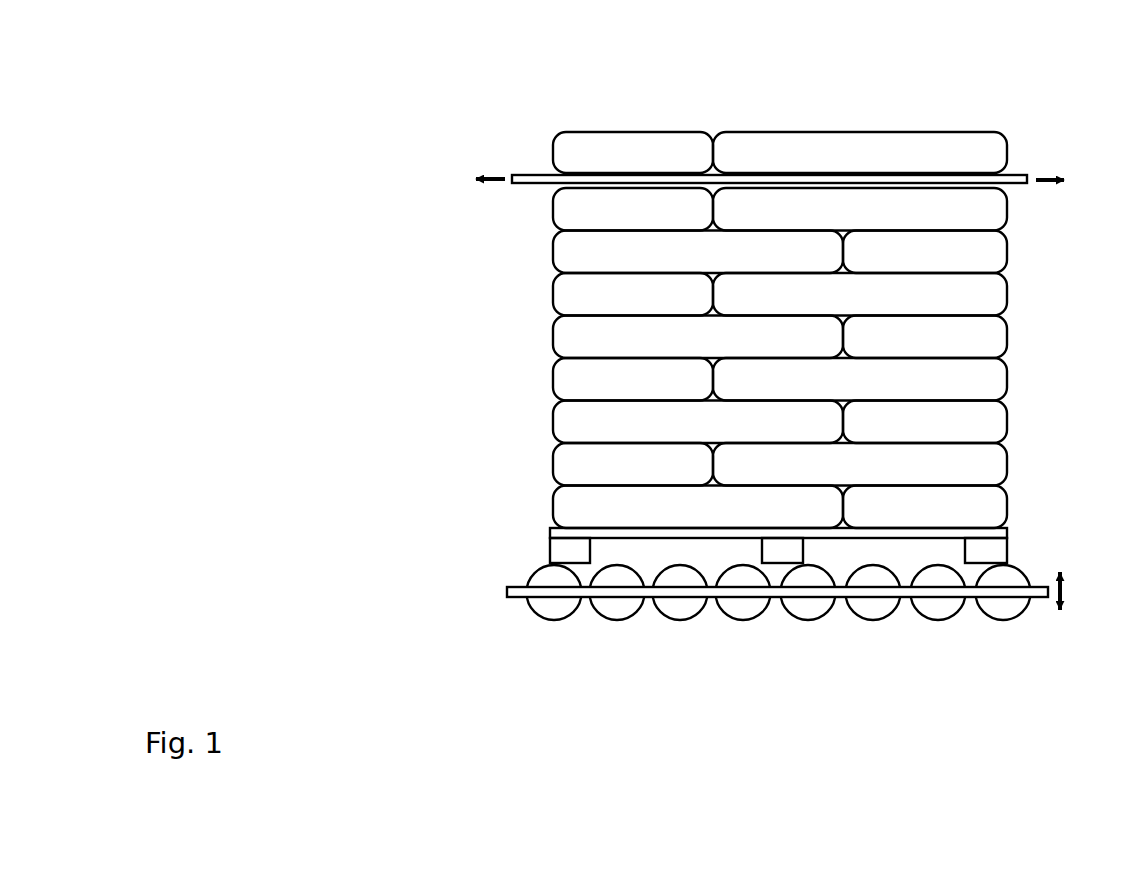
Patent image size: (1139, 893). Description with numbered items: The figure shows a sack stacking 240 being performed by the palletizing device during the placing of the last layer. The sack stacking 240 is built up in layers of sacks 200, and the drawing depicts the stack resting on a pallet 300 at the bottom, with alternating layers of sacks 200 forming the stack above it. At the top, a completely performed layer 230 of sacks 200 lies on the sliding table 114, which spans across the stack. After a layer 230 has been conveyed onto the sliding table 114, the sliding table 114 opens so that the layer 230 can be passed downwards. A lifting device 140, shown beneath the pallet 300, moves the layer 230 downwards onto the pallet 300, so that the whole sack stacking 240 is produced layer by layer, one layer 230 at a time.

The sliding table 114 is at (531, 174).
The sacks 200 is at (742, 146).
The layer 230 is at (980, 428).
The sack stacking 240 is at (742, 283).
The pallet 300 is at (1024, 536).
The lifting device 140 is at (462, 597).